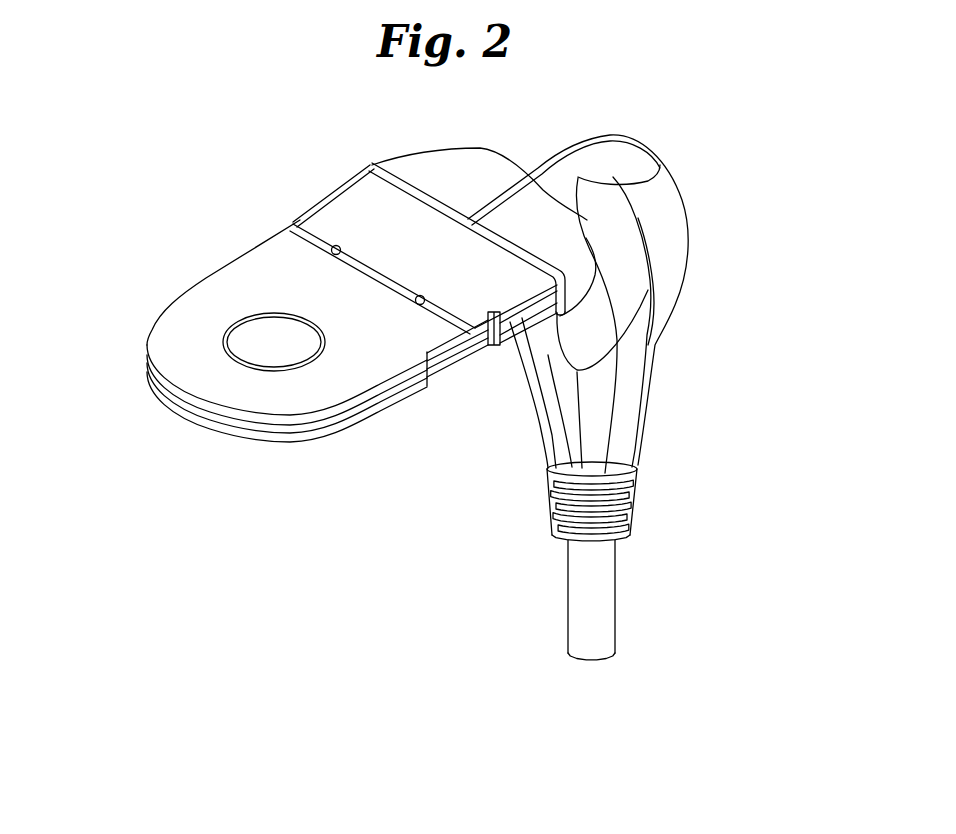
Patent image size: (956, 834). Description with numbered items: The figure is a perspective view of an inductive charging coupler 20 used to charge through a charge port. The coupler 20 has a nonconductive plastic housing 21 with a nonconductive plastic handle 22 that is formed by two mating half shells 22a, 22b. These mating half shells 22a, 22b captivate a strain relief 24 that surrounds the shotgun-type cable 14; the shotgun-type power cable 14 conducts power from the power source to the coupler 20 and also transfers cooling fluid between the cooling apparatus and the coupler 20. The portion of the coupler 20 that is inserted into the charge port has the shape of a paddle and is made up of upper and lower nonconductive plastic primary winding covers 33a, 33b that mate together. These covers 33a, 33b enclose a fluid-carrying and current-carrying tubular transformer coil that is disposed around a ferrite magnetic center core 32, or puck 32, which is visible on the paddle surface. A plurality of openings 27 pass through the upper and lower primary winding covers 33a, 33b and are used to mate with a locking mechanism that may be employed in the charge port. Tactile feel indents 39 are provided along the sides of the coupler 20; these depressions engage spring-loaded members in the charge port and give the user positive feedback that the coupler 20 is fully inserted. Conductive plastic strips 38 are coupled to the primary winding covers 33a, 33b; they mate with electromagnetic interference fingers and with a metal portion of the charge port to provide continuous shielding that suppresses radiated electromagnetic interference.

The inductive charging coupler 20 is at (168, 601).
The housing 21 is at (722, 471).
The handle 22 is at (681, 203).
The mating half shell 22a is at (641, 434).
The mating half shell 22b is at (540, 443).
The strain relief 24 is at (637, 496).
The shotgun-type cable 14 is at (615, 610).
The openings 27 is at (332, 254).
The ferrite magnetic center core 32 is at (259, 353).
The upper primary winding cover 33a is at (249, 253).
The lower primary winding cover 33b is at (373, 409).
The conductive plastic strips 38 is at (320, 213).
The tactile feel indents 39 is at (491, 366).